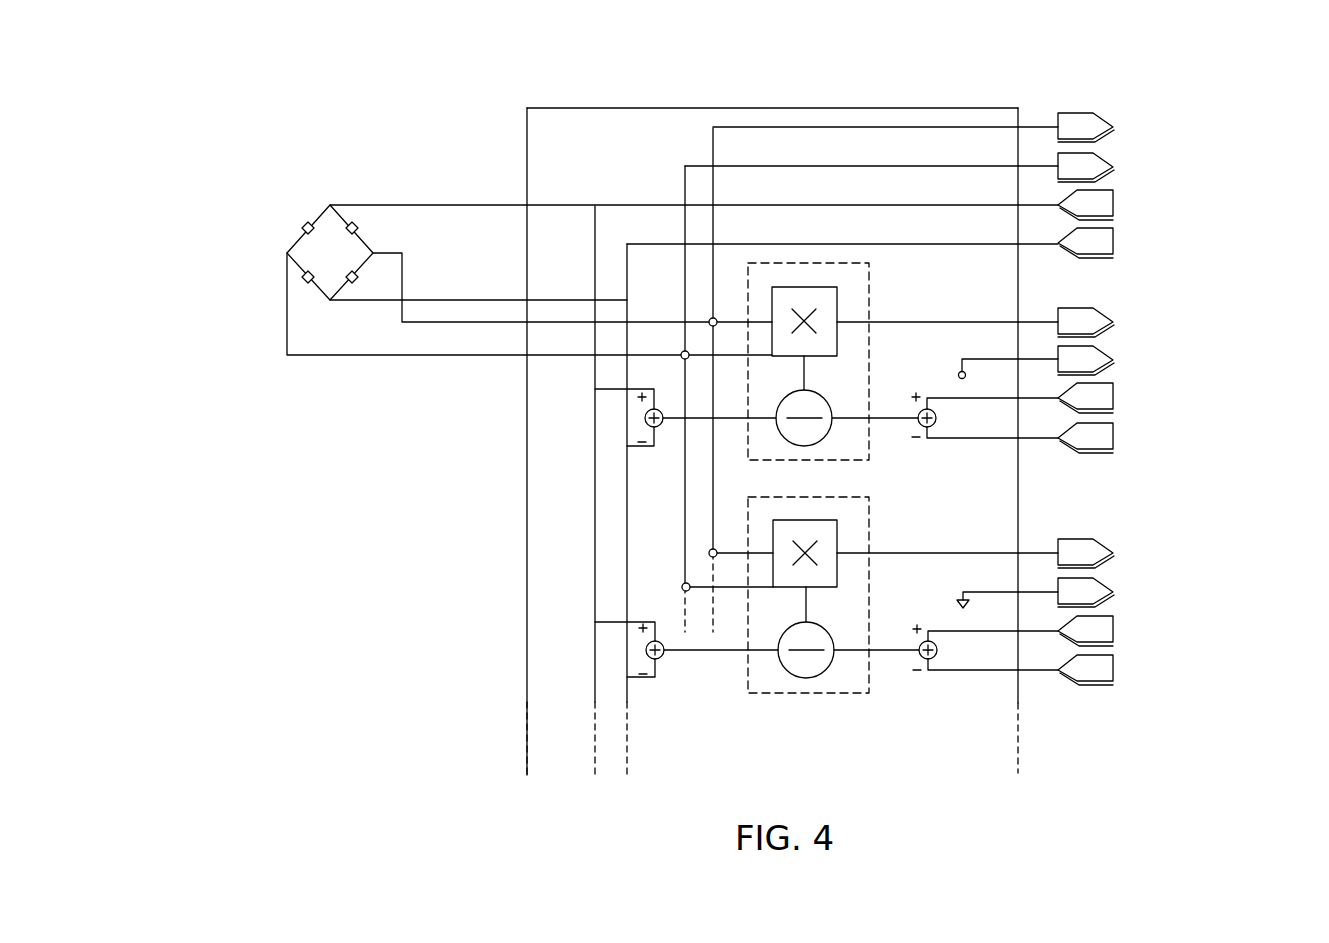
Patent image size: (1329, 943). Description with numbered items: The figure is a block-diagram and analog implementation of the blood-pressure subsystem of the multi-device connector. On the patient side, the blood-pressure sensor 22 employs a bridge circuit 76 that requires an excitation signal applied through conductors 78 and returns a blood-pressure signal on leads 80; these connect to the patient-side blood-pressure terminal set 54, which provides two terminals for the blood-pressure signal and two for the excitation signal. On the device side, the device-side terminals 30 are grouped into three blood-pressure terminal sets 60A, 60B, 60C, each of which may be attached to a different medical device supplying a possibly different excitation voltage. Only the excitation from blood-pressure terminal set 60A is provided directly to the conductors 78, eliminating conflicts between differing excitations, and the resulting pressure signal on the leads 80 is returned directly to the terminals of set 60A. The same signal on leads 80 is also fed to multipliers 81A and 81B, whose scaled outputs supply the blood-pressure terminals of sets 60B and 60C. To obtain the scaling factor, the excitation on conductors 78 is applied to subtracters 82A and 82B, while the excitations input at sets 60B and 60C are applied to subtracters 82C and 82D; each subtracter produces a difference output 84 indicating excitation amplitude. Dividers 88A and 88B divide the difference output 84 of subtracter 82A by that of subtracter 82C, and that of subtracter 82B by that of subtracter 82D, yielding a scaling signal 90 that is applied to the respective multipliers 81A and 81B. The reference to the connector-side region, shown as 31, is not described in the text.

The blood-pressure sensor 22 is at (281, 227).
The bridge circuit 76 is at (262, 250).
The conductors 78 is at (450, 205).
The leads 80 is at (417, 324).
The connector 31 is at (966, 355).
The blood-pressure terminal set 54 is at (489, 460).
The device-side terminals 30 is at (1058, 724).
The blood-pressure terminal set 60A is at (1222, 104).
The blood-pressure terminal set 60B is at (1224, 299).
The blood-pressure terminal set 60C is at (1225, 542).
The multiplier 81A is at (840, 292).
The multiplier 81B is at (840, 524).
The subtracter 82A is at (662, 430).
The subtracter 82B is at (663, 662).
The subtracter 82C is at (937, 418).
The subtracter 82D is at (938, 650).
The difference outputs 84 is at (732, 422).
The divider 88A is at (830, 440).
The divider 88B is at (810, 680).
The scaling signal 90 is at (810, 372).